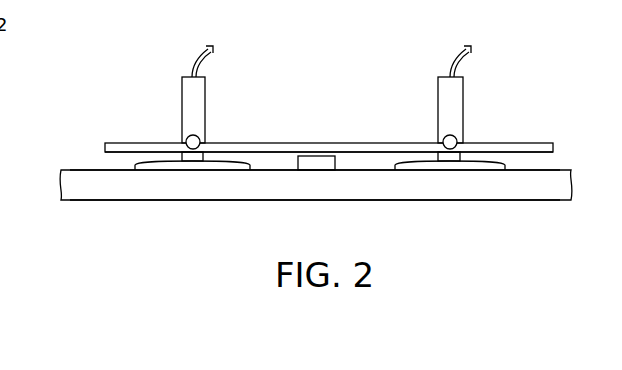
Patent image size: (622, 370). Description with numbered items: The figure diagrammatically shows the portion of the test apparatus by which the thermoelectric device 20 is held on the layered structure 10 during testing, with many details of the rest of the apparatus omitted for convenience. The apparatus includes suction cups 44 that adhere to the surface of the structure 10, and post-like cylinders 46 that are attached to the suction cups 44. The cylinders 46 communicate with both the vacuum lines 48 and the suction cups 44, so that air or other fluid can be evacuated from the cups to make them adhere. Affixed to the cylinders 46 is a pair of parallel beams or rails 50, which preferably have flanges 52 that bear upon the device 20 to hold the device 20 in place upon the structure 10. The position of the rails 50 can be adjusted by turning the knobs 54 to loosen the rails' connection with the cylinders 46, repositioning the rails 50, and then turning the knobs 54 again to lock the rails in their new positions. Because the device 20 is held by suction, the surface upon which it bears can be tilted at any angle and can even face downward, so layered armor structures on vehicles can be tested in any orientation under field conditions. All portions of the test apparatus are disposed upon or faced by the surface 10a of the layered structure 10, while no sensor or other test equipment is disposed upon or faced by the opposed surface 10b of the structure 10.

The layered structure 10 is at (265, 200).
The surface of layered structure 10a is at (82, 170).
The opposed surface of structure 10b is at (82, 200).
The thermoelectric device 20 is at (310, 157).
The suction cups 44 is at (162, 161).
The post-like cylinders 46 is at (207, 90).
The vacuum lines 48 is at (205, 59).
The parallel beams or rails 50 is at (295, 143).
The flanges 52 is at (378, 153).
The knobs 54 is at (200, 136).